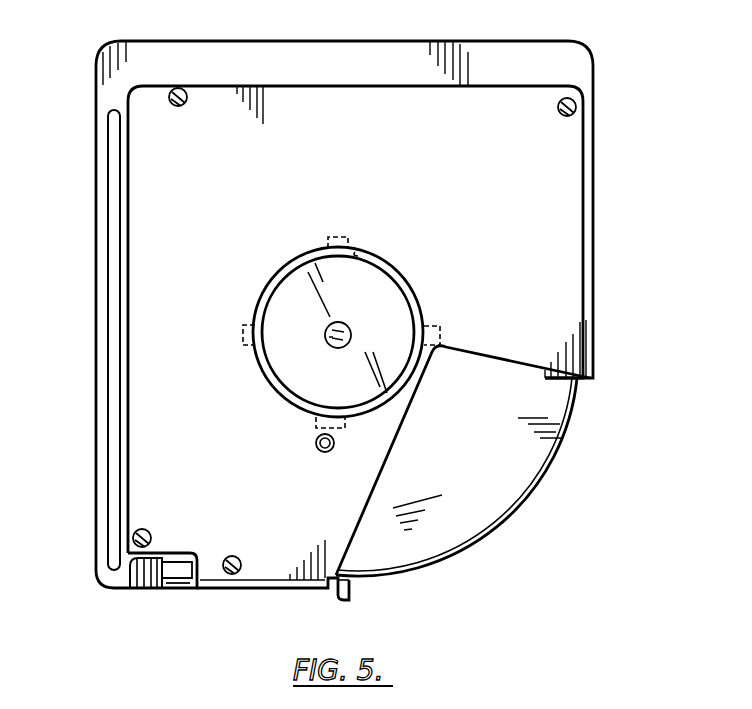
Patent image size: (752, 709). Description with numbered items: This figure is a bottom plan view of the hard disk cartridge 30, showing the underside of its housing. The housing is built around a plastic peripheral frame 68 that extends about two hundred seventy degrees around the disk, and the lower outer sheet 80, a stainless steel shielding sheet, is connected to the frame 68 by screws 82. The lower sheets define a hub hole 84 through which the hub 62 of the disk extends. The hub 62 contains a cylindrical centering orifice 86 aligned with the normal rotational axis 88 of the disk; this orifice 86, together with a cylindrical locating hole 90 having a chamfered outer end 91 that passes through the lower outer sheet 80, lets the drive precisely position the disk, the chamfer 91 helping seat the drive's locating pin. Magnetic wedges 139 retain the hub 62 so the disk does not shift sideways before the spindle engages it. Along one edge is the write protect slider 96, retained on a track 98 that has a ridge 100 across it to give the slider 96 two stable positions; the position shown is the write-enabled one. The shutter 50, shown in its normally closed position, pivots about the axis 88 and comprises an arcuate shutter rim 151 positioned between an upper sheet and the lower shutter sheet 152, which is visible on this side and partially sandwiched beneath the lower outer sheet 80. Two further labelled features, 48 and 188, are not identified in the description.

The hard disk cartridge 30 is at (94, 264).
The peripheral frame 68 is at (583, 78).
The lower outer sheet 80 is at (567, 220).
The screws 82 is at (176, 88).
The hub 62 is at (276, 294).
The hub hole 84 is at (358, 252).
The cylindrical centering orifice 86 is at (331, 343).
The normal rotational axis 88 is at (342, 330).
The magnetic wedges 139 is at (438, 325).
The cylindrical locating hole 90 is at (318, 452).
The chamfered outer end 91 is at (318, 443).
The cover plate 48 is at (578, 427).
The shutter 50 is at (469, 550).
The arcuate shutter rim 151 is at (505, 515).
The lower shutter sheet 152 is at (524, 470).
The write protect slider 96 is at (130, 599).
The track 98 is at (183, 580).
The ridge 100 is at (168, 590).
The lug 188 is at (350, 598).